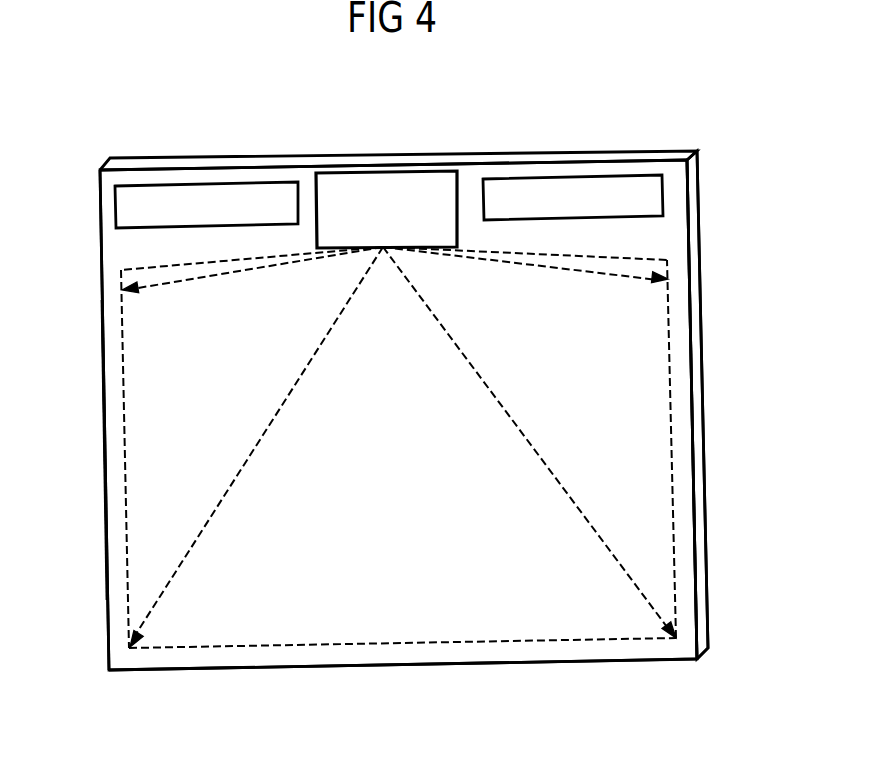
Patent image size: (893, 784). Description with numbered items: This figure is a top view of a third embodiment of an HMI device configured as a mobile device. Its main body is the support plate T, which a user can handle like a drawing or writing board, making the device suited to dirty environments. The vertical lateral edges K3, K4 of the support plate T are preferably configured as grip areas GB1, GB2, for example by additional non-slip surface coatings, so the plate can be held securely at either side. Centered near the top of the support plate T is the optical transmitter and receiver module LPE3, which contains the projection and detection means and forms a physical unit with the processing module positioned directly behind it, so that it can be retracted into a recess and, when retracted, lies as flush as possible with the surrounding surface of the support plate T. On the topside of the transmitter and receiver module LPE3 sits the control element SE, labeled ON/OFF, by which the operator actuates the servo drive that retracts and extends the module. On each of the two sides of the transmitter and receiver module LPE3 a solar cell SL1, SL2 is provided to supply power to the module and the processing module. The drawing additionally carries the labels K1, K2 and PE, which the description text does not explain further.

The support plate T is at (694, 159).
The top edge K1 is at (650, 152).
The bottom edge K2 is at (123, 667).
The vertical lateral edge K3 is at (699, 181).
The vertical lateral edge K4 is at (101, 257).
The grip area GB1 is at (683, 437).
The grip area GB2 is at (110, 452).
The solar cell SL1 is at (205, 202).
The solar cell SL2 is at (572, 194).
The control element SE is at (347, 188).
The optical transmitter and receiver module LPE3 is at (392, 182).
The projection area PE is at (650, 257).